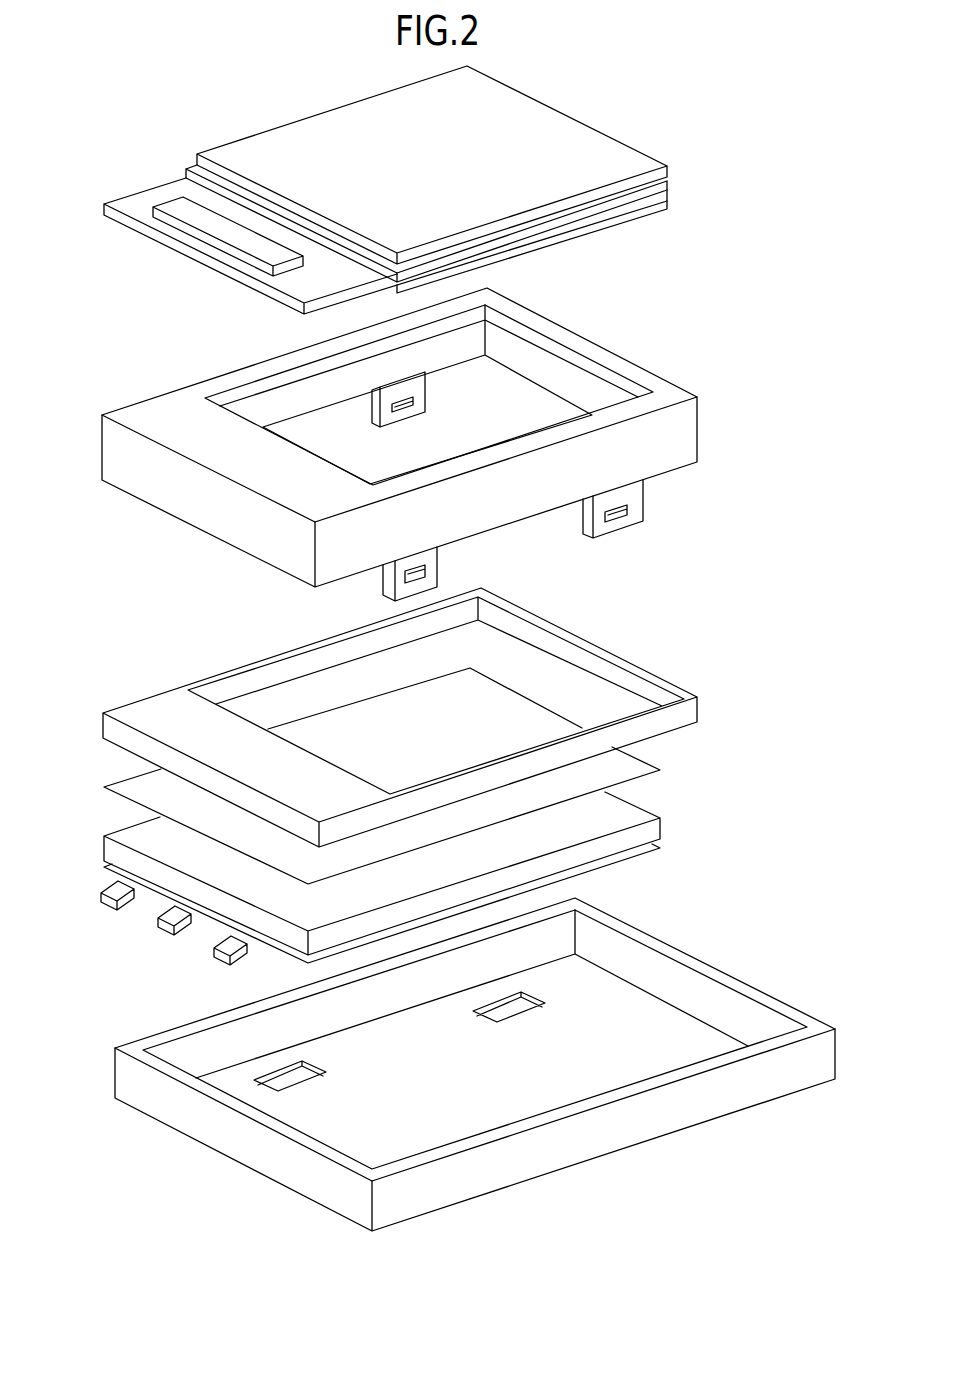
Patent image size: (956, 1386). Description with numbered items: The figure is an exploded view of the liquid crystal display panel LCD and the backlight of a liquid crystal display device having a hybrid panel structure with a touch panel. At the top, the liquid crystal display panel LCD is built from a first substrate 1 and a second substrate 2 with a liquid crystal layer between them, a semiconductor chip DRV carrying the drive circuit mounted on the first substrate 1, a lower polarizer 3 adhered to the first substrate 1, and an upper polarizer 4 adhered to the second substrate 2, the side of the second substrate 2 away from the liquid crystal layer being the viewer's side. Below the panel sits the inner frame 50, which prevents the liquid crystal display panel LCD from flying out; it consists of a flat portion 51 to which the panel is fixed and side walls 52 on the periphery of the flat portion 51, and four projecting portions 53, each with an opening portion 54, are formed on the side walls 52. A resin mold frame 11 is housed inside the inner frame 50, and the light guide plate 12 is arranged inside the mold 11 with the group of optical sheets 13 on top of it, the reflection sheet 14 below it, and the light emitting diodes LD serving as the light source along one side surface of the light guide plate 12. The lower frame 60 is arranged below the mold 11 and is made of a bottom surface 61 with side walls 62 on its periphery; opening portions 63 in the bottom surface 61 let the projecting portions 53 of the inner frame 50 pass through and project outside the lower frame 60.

The first substrate 1 is at (668, 190).
The second substrate 2 is at (668, 179).
The lower polarizer 3 is at (568, 243).
The upper polarizer 4 is at (667, 166).
The liquid crystal display panel LCD is at (459, 190).
The semiconductor chip DRV is at (183, 205).
The resin mold frame 11 is at (598, 652).
The light guide plate 12 is at (658, 815).
The group of optical sheets 13 is at (603, 777).
The reflection sheet 14 is at (655, 847).
The light emitting diodes LD is at (100, 893).
The inner frame 50 is at (427, 444).
The flat portion 51 is at (163, 405).
The side walls 52 is at (680, 445).
The projecting portions 53 is at (628, 494).
The opening portion 54 is at (633, 516).
The lower frame 60 is at (460, 1064).
The bottom surface 61 is at (659, 1027).
The side walls 62 is at (730, 1097).
The opening portions 63 is at (284, 1070).